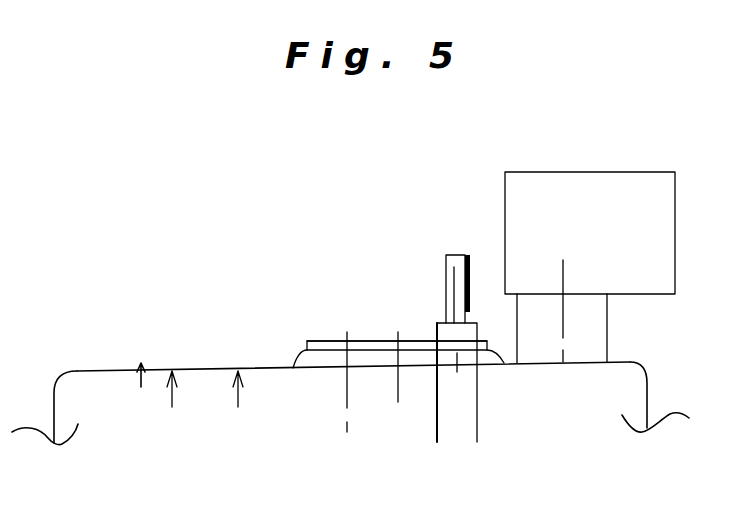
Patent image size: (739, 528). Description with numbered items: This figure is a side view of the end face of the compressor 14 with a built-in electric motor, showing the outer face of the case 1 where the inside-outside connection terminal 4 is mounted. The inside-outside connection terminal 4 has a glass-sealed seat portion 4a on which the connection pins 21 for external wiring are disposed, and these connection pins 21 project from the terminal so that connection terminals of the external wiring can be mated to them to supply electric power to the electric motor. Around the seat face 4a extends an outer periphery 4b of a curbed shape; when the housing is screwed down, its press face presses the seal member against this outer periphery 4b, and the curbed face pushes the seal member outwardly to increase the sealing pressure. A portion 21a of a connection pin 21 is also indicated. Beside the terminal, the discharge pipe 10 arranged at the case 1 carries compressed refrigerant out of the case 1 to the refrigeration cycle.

The case 1 is at (208, 387).
The compressor 14 is at (142, 363).
The inside-outside connection terminal 4 is at (335, 363).
The glass-sealed seat portion 4a is at (379, 360).
The outer periphery 4b is at (295, 365).
The connection pin 21 is at (450, 282).
The probe tip / contact portion 21a is at (466, 258).
The discharge pipe 10 is at (593, 322).